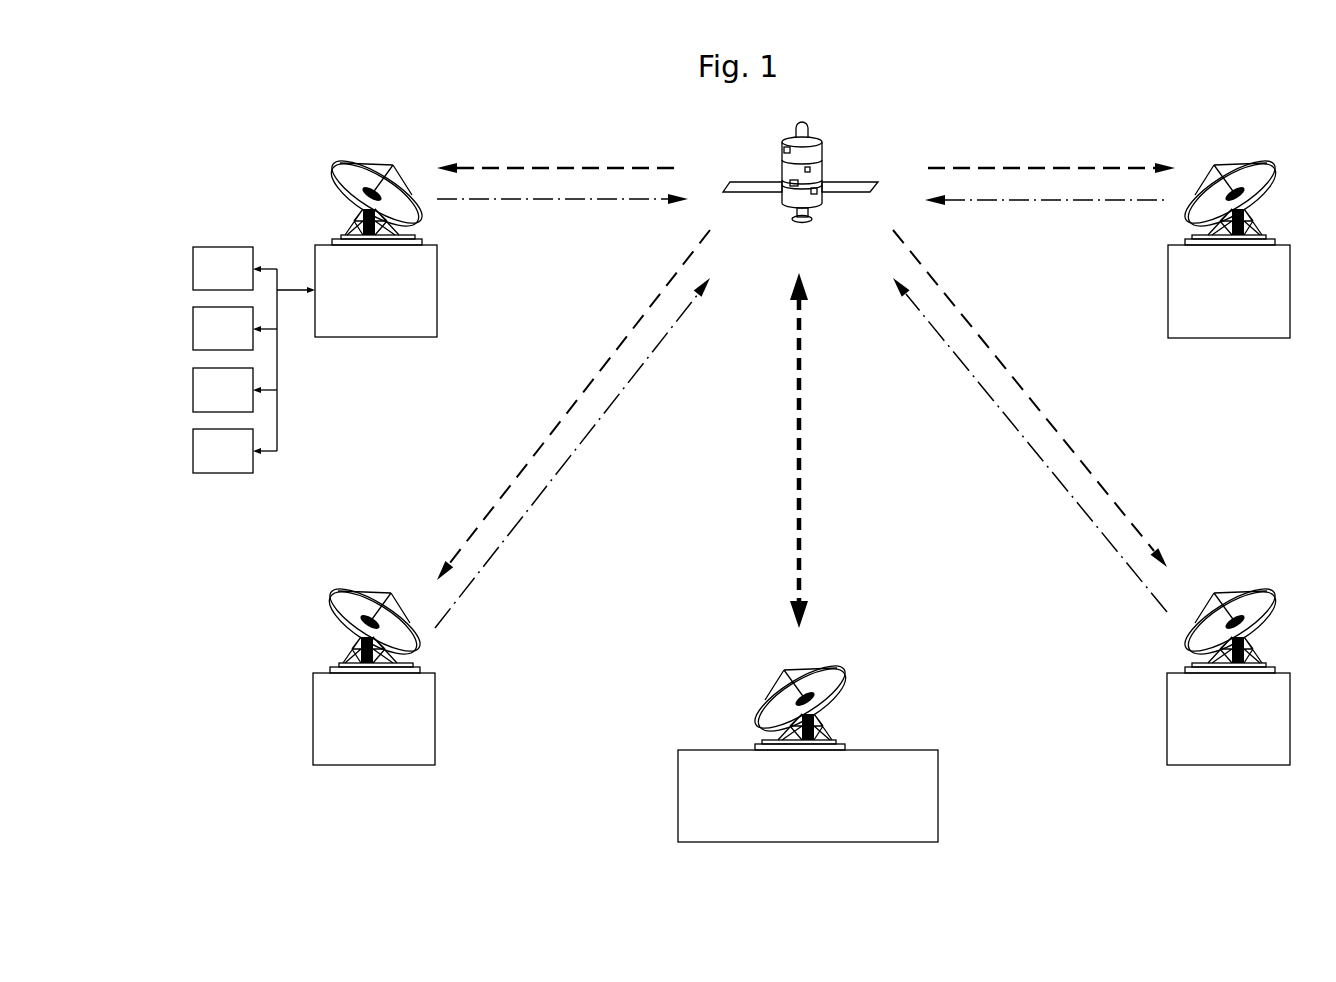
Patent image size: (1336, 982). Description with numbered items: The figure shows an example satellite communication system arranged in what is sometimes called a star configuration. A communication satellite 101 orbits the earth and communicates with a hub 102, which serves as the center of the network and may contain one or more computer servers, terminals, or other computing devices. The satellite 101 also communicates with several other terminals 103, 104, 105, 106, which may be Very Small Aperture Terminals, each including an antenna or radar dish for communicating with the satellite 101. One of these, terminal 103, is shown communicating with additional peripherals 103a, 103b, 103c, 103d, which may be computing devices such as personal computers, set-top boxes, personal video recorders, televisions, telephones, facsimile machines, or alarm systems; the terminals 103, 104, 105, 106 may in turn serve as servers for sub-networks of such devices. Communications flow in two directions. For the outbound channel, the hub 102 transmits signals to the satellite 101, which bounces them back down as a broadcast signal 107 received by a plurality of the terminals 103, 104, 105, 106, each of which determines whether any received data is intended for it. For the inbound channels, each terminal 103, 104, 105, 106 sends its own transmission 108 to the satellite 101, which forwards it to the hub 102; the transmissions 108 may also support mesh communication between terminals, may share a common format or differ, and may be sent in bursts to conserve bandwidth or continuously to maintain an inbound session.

The communication satellite 101 is at (800, 185).
The hub 102 is at (808, 748).
The terminal 103 is at (376, 243).
The peripheral 103a is at (235, 268).
The peripheral 103b is at (235, 328).
The peripheral 103c is at (235, 390).
The peripheral 103d is at (235, 451).
The terminal 104 is at (1229, 244).
The terminal 105 is at (374, 671).
The terminal 106 is at (1228, 671).
The broadcast signal 107 is at (806, 384).
The transmission 108 is at (801, 411).